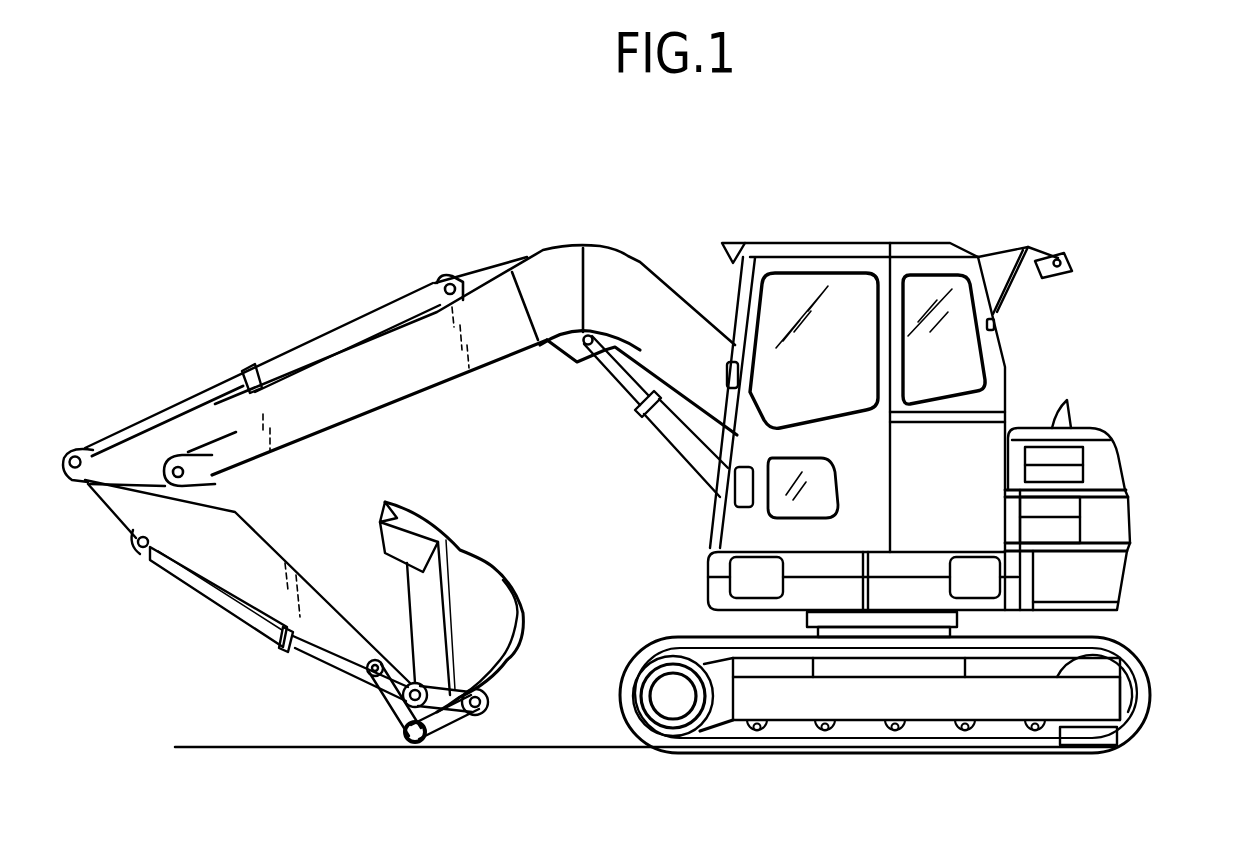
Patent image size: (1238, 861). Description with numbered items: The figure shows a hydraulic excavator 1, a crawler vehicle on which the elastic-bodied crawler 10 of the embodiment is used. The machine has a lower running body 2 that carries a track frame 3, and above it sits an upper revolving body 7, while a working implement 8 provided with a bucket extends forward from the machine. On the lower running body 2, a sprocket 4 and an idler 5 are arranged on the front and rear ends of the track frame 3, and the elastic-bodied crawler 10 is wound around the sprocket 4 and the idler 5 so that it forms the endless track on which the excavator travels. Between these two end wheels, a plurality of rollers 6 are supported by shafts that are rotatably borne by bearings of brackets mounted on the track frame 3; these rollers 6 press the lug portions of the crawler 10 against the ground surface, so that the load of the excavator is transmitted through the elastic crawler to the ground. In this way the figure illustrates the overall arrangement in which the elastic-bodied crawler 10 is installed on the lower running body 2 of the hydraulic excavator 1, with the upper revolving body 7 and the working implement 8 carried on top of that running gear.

The hydraulic excavator 1 is at (1090, 352).
The lower running body 2 is at (1162, 647).
The track frame 3 is at (863, 713).
The sprocket 4 is at (670, 758).
The idler 5 is at (1148, 708).
The rollers 6 is at (812, 750).
The upper revolving body 7 is at (1115, 572).
The working implement 8 is at (321, 298).
The elastic-bodied crawler 10 is at (957, 750).